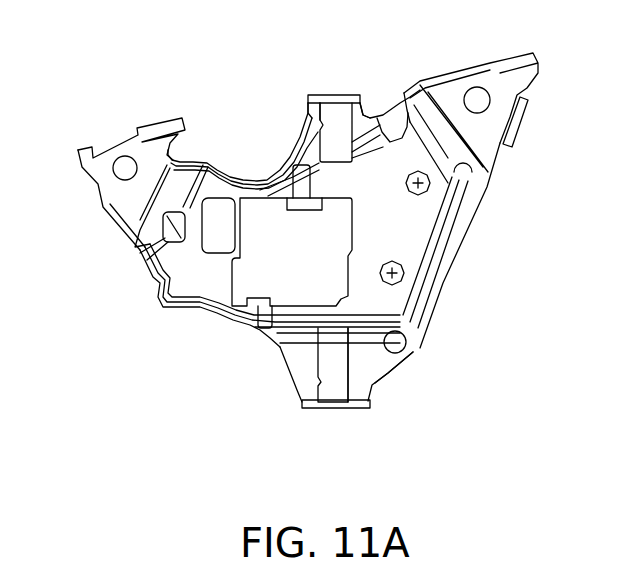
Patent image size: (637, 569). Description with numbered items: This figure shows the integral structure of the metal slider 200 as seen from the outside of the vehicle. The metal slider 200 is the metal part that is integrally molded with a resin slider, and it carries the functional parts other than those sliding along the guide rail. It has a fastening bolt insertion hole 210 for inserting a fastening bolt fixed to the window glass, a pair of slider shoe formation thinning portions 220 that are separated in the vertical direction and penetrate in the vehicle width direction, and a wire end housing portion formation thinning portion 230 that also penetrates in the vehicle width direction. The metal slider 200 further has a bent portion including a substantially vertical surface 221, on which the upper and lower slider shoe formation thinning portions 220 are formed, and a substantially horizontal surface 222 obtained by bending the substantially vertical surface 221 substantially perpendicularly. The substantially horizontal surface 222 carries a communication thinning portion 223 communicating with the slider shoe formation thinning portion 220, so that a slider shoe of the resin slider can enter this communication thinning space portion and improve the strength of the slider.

The metal slider 200 is at (96, 80).
The fastening bolt insertion hole 210 is at (125, 168).
The slider shoe formation thinning portion 220 is at (335, 118).
The substantially vertical surface 221 is at (362, 96).
The substantially horizontal surface 222 is at (306, 96).
The communication thinning portion 223 is at (333, 97).
The wire end housing portion formation thinning portion 230 is at (263, 217).